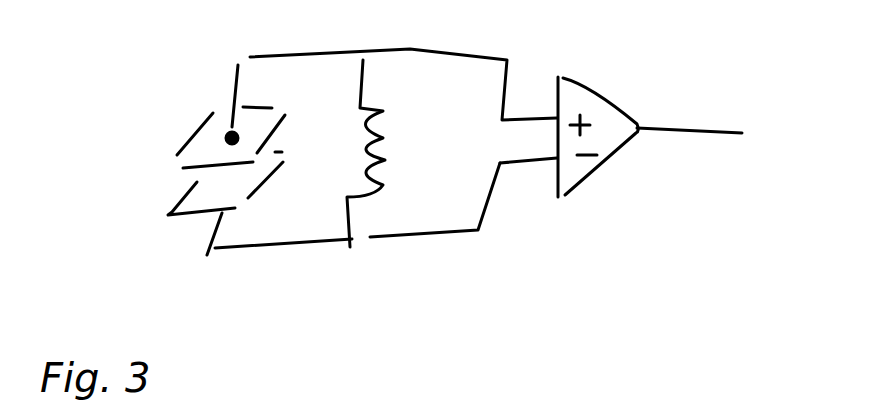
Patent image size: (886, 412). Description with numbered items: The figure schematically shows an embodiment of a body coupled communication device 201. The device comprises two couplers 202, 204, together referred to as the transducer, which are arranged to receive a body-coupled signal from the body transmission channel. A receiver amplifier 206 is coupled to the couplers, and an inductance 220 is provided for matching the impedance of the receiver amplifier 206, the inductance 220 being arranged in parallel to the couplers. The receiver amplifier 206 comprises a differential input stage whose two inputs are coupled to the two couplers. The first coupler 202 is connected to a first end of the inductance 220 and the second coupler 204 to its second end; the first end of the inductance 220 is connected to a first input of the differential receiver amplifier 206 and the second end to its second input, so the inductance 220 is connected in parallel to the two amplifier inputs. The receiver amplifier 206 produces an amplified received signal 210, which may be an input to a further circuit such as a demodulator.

The body coupled communication device 201 is at (770, 28).
The first coupler 202 is at (177, 145).
The second coupler 204 is at (177, 197).
The receiver amplifier 206 is at (602, 137).
The amplified received signal 210 is at (700, 137).
The inductance 220 is at (445, 177).